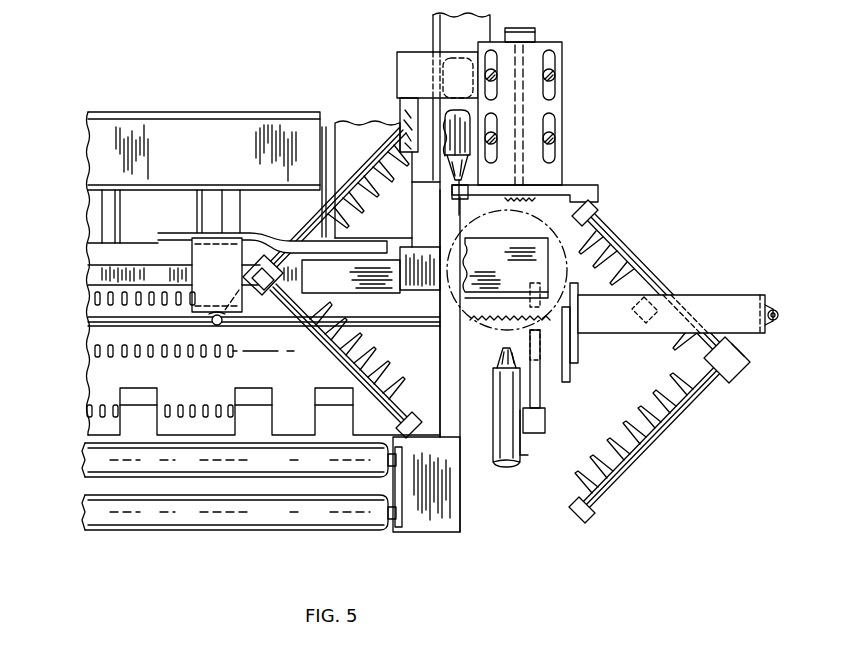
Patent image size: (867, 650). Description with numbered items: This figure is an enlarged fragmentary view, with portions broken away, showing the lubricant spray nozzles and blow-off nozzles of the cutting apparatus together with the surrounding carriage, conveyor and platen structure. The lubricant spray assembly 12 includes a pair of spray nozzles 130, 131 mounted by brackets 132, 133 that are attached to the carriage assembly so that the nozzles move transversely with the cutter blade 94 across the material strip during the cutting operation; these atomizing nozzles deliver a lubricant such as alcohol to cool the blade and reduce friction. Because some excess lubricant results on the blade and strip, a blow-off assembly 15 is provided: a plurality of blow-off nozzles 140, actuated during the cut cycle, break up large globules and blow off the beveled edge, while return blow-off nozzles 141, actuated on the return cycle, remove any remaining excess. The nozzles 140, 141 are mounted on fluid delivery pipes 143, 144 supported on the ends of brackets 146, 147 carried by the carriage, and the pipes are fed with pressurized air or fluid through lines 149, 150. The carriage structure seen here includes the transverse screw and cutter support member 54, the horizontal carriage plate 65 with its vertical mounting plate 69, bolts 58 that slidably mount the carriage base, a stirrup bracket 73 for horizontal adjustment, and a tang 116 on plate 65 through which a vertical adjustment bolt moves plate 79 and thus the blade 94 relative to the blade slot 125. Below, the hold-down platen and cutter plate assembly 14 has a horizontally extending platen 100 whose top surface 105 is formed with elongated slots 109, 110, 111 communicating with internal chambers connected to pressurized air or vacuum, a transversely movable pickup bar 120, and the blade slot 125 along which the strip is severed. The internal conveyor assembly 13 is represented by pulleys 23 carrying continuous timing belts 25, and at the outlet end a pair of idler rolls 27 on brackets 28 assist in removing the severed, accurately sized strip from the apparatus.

The lubricant spray assembly 12 is at (508, 490).
The internal conveyor assembly 13 is at (130, 216).
The hold-down platen and cutter plate assembly 14 is at (70, 383).
The blow-off assembly 15 is at (676, 458).
The pulleys 23 is at (241, 215).
The timing belts 25 is at (188, 225).
The idler rolls 27 is at (110, 457).
The brackets 28 is at (405, 500).
The screw and cutter support member 54 is at (207, 125).
The bolts 58 is at (556, 74).
The carriage plate 65 is at (540, 178).
The vertical mounting plate 69 is at (590, 195).
The stirrup bracket 73 is at (535, 35).
The plate 79 is at (353, 289).
The cutter blade 94 is at (598, 228).
The platen 100 is at (95, 426).
The top surface 105 is at (213, 390).
The elongated slots 109 is at (96, 297).
The elongated slots 110 is at (93, 349).
The elongated slots 111 is at (217, 418).
The tang 116 is at (505, 199).
The pickup bar 120 is at (103, 275).
The blade slot 125 is at (106, 328).
The spray nozzle 130 is at (462, 122).
The spray nozzle 131 is at (503, 435).
The bracket 132 is at (435, 73).
The bracket 133 is at (537, 391).
The blow-off nozzles 140 is at (617, 256).
The return blow-off nozzles 141 is at (366, 180).
The fluid delivery pipe 143 is at (655, 277).
The fluid delivery pipe 144 is at (314, 219).
The bracket 146 is at (748, 308).
The bracket 147 is at (233, 280).
The line 149 is at (786, 315).
The line 150 is at (222, 327).